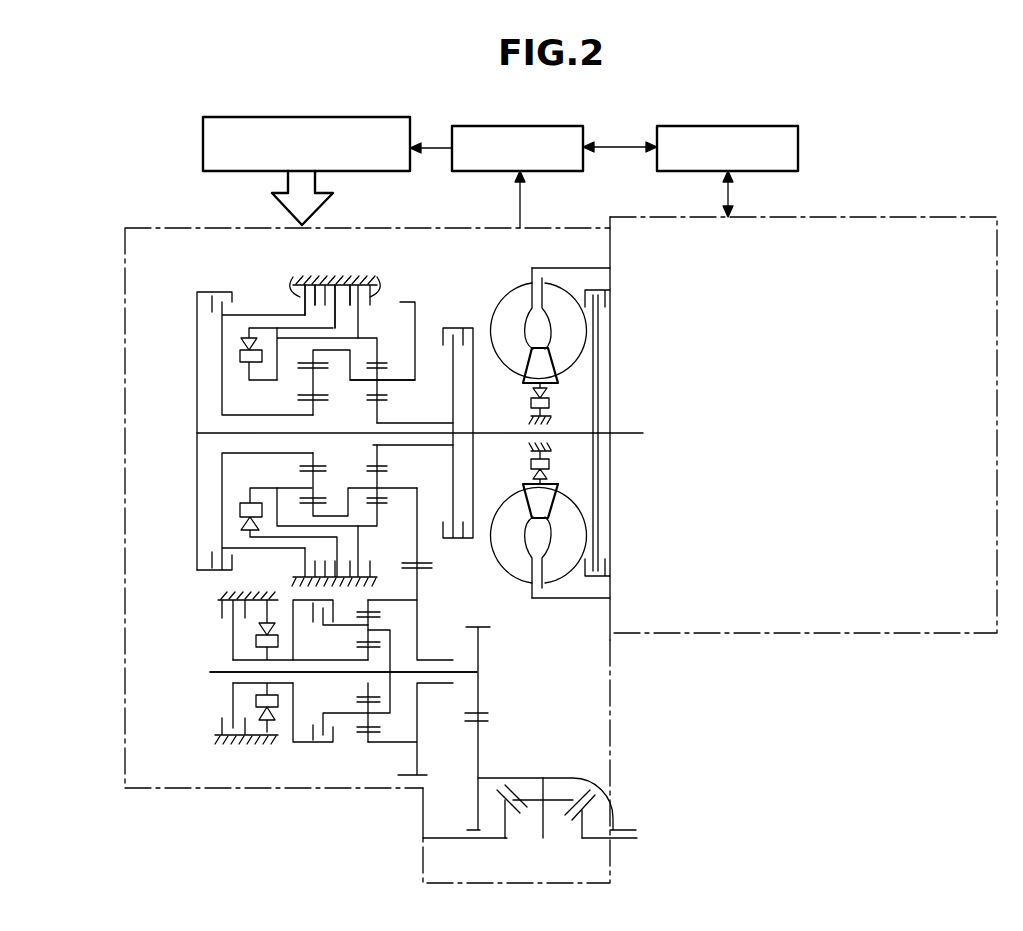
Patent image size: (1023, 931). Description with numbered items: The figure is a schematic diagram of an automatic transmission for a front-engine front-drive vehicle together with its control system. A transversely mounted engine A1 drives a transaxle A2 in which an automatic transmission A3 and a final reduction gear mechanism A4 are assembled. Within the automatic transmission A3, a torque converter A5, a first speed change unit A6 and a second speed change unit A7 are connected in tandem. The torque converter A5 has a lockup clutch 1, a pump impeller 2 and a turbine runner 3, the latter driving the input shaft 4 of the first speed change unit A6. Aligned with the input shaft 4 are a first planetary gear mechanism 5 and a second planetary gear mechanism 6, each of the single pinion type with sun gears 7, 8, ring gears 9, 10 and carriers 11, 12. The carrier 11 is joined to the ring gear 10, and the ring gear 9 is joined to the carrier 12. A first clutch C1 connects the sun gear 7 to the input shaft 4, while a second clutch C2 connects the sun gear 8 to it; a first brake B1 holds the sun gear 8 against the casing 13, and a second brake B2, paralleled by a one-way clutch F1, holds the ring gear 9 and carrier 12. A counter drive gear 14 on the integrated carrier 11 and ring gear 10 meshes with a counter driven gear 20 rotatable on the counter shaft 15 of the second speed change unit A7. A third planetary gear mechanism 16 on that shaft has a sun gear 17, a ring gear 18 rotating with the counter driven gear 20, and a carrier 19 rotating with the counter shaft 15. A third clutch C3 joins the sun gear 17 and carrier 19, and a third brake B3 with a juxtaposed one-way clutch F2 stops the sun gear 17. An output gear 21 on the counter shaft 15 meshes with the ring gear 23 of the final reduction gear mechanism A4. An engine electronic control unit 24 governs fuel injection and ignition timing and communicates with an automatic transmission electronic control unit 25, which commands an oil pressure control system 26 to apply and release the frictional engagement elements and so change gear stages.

The lockup clutch 1 is at (607, 295).
The pump impeller 2 is at (513, 300).
The turbine runner 3 is at (560, 563).
The input shaft 4 is at (492, 433).
The first planetary gear mechanism 5 is at (384, 318).
The second planetary gear mechanism 6 is at (292, 352).
The sun gear 7 is at (383, 401).
The sun gear 8 is at (316, 466).
The ring gear 9 is at (381, 360).
The ring gear 10 is at (308, 505).
The carrier 11 is at (402, 382).
The carrier 12 is at (287, 488).
The casing 13 is at (328, 276).
The counter drive gear 14 is at (422, 558).
The counter shaft 15 is at (222, 670).
The third planetary gear mechanism 16 is at (348, 746).
The sun gear 17 is at (358, 650).
The ring gear 18 is at (362, 733).
The carrier 19 is at (380, 718).
The counter driven gear 20 is at (420, 584).
The output gear 21 is at (484, 712).
The ring gear 23 is at (484, 723).
The engine electronic control unit 24 is at (772, 126).
The automatic transmission electronic control unit 25 is at (556, 126).
The oil pressure control system 26 is at (370, 117).
The engine A1 is at (927, 638).
The transaxle A2 is at (123, 392).
The automatic transmission A3 is at (192, 507).
The final reduction gear mechanism A4 is at (548, 757).
The torque converter A5 is at (522, 596).
The first speed change unit A6 is at (194, 394).
The second speed change unit A7 is at (198, 678).
The first brake B1 is at (308, 276).
The second brake B2 is at (380, 277).
The third brake B3 is at (222, 724).
The first clutch C1 is at (453, 328).
The second clutch C2 is at (222, 290).
The third clutch C3 is at (317, 742).
The one-way clutch F1 is at (240, 355).
The one-way clutch F2 is at (273, 713).